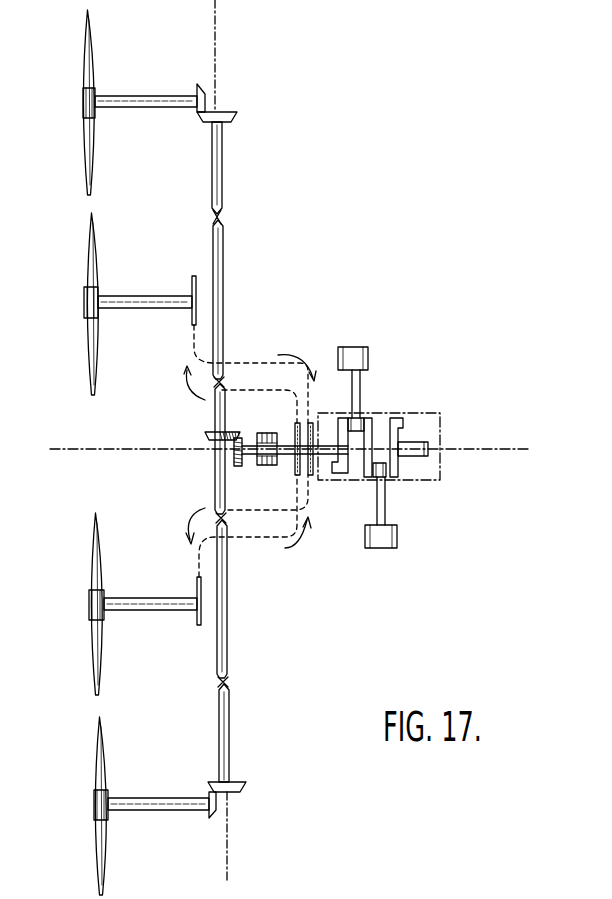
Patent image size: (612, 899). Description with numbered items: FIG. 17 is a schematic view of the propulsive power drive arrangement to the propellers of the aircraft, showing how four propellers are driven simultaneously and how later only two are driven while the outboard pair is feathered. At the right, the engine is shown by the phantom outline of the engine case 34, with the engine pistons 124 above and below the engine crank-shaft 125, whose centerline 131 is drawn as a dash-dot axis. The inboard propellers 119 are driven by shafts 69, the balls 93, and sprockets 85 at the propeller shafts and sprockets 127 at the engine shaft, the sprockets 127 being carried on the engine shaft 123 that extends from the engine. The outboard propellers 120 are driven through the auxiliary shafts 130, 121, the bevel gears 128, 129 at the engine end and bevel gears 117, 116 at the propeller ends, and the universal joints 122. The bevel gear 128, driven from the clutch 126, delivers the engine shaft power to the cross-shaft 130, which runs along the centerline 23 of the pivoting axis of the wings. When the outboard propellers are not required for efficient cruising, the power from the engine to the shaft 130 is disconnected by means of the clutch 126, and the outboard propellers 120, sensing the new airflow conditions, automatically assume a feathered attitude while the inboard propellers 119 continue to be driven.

The centerline of the pivoting axis of the wings 23 is at (215, 52).
The engine case 34 is at (432, 420).
The shafts 69 is at (128, 297).
The sprockets 85 is at (191, 318).
The balls 93 is at (258, 362).
The bevel gear 116 is at (197, 118).
The bevel gear 117 is at (230, 112).
The inboard propellers 119 is at (90, 270).
The outboard propellers 120 is at (86, 128).
The auxiliary shafts 121 is at (137, 99).
The universal joints 122 is at (230, 680).
The transverse shaft 123 is at (280, 540).
The engine pistons 124 is at (367, 358).
The engine crank-shaft 125 is at (398, 425).
The clutch 126 is at (255, 436).
The sprockets 127 is at (297, 468).
The bevel gear 128 is at (235, 456).
The bevel gear 129 is at (212, 432).
The cross-shaft 130 is at (222, 256).
The centerline of the engine crankshaft 131 is at (522, 446).